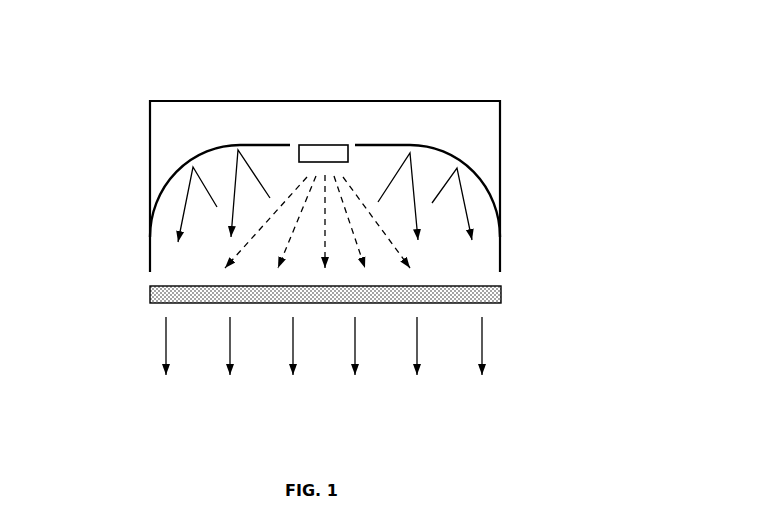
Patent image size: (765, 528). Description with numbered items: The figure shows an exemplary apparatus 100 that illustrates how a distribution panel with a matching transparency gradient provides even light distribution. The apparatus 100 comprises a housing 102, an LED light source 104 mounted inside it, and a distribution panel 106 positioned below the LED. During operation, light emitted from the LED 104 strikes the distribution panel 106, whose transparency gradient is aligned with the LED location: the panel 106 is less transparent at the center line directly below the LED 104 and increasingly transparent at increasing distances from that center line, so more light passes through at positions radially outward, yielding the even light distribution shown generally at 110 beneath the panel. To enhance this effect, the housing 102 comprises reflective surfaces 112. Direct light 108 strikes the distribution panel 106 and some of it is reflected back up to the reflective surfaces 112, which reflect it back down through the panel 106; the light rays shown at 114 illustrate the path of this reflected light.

The apparatus 100 is at (606, 53).
The housing 102 is at (180, 101).
The LED light source 104 is at (320, 145).
The distribution panel 106 is at (149, 292).
The direct light 108 is at (363, 187).
The even light distribution 110 is at (165, 400).
The reflective surfaces 112 is at (195, 155).
The reflected light rays 114 is at (478, 210).